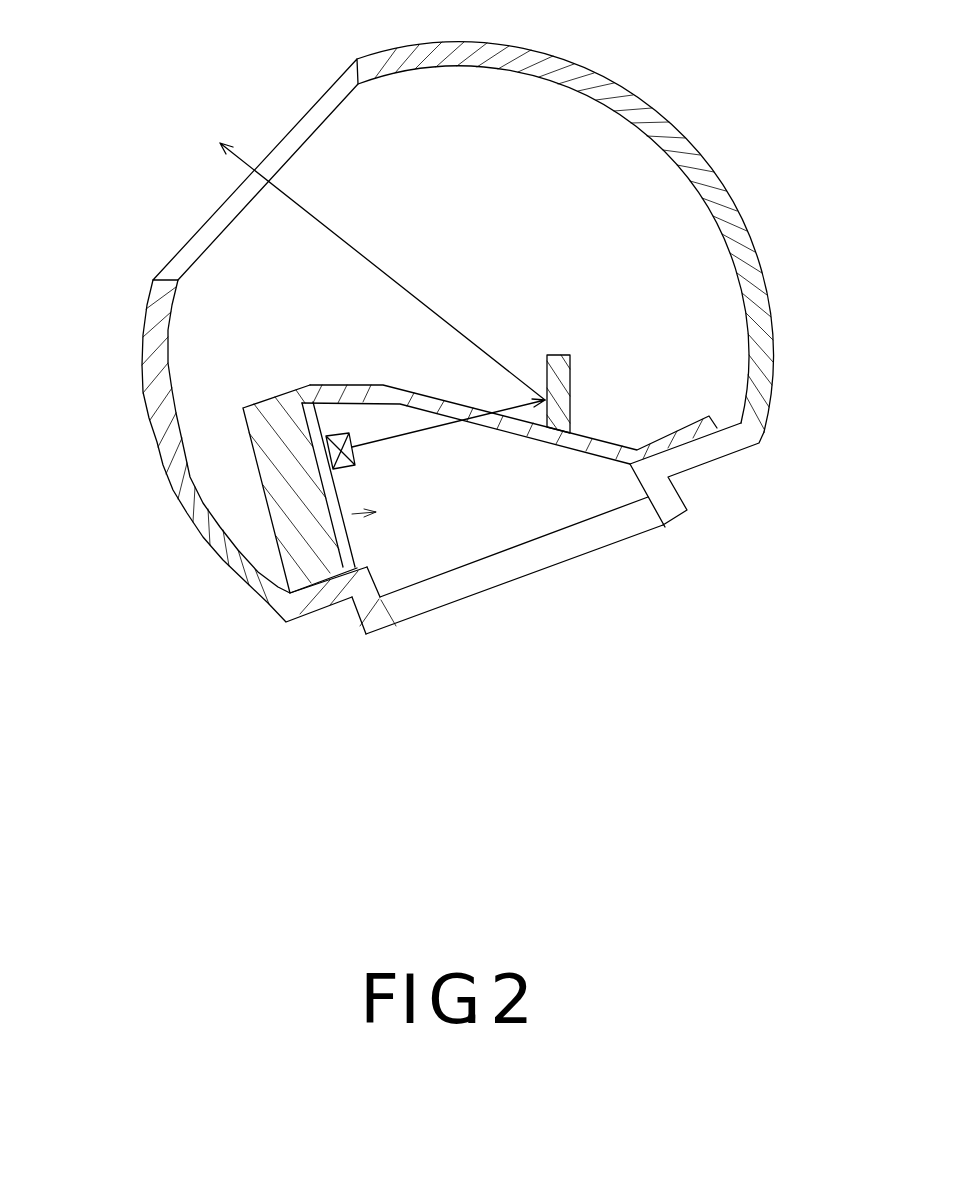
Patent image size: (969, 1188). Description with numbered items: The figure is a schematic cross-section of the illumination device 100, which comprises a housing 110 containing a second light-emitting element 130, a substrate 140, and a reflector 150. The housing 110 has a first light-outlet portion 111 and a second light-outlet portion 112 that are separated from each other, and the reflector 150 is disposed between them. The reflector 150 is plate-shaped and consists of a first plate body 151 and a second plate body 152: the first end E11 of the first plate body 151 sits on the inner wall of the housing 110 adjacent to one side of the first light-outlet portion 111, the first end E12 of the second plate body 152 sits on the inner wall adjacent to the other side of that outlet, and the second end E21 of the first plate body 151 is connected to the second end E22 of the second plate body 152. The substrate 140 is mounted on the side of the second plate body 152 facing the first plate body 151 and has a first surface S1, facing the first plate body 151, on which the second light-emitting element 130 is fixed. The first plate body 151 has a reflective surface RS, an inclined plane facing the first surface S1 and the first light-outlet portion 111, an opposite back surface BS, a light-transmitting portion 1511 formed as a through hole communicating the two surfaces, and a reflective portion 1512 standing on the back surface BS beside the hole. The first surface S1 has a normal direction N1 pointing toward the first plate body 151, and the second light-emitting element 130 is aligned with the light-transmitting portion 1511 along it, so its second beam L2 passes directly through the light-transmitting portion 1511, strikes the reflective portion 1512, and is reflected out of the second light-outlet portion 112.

The illumination device 100 is at (87, 42).
The housing 110 is at (682, 124).
The first light-outlet portion 111 is at (637, 523).
The second light-outlet portion 112 is at (322, 108).
The first end of the first plate body E11 is at (690, 442).
The first end of the second plate body E12 is at (345, 603).
The second light-emitting element 130 is at (324, 443).
The substrate 140 is at (372, 568).
The reflector 150 is at (131, 683).
The first plate body 151 is at (410, 383).
The second plate body 152 is at (273, 458).
The light-transmitting portion 1511 is at (527, 449).
The reflective portion 1512 is at (565, 352).
The second end of the first plate body E21 is at (313, 383).
The second end of the second plate body E22 is at (262, 402).
The second beam L2 is at (243, 150).
The normal direction N1 is at (380, 508).
The first surface S1 is at (360, 539).
The back surface BS is at (602, 428).
The reflective surface RS is at (596, 469).